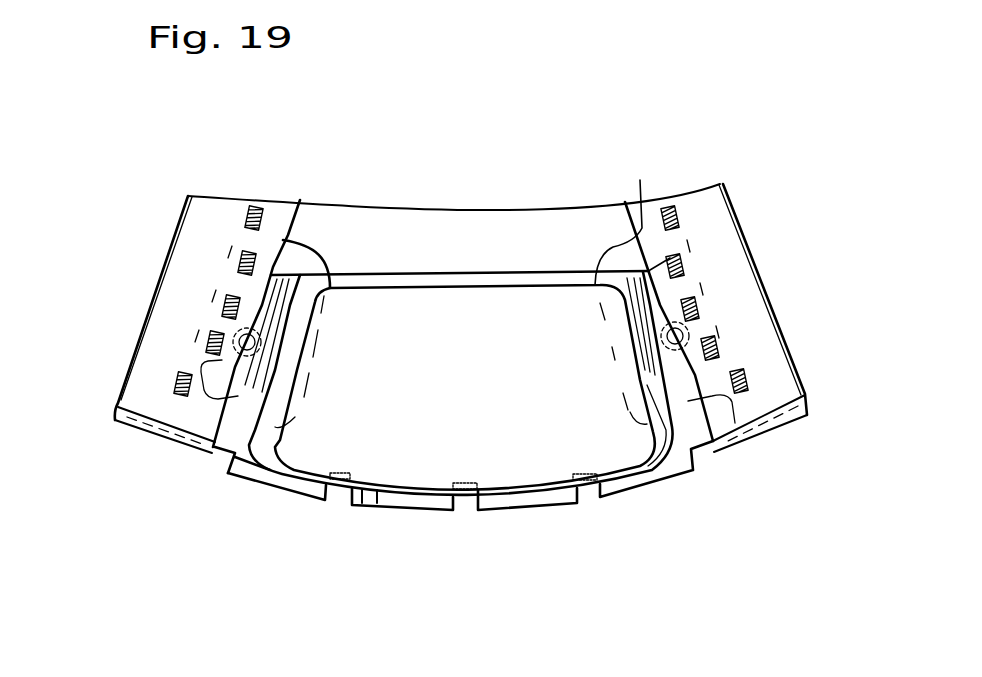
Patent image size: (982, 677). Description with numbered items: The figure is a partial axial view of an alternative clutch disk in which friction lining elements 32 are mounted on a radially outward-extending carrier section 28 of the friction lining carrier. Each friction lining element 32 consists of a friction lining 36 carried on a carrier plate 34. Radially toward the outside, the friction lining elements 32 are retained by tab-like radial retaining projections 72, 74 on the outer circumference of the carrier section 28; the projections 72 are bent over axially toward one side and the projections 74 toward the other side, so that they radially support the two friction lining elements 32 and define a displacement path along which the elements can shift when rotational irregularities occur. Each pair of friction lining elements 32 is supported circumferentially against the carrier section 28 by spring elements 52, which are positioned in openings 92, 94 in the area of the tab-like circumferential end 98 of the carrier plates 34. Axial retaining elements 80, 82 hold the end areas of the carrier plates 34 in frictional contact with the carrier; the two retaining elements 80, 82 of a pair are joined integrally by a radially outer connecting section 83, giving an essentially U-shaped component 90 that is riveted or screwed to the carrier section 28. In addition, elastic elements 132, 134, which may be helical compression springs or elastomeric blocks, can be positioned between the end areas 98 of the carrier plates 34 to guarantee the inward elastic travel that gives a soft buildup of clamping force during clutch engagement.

The carrier section 28 is at (500, 222).
The friction lining 36 is at (460, 465).
The tab-like circumferential end 98 is at (280, 265).
The opening 92 is at (650, 262).
The axial retaining element 82 is at (156, 286).
The axial retaining element 80 is at (762, 335).
The U-shaped component 90 is at (805, 370).
The radially outer connecting section 83 is at (780, 430).
The spring element 52 is at (222, 300).
The elastic element 134 is at (695, 305).
The elastic element 132 is at (225, 358).
The opening 94 is at (238, 437).
The radial retaining projection 72 is at (277, 478).
The radial retaining projection 74 is at (360, 503).
The friction lining element 32 is at (377, 500).
The carrier plate 34 is at (657, 470).